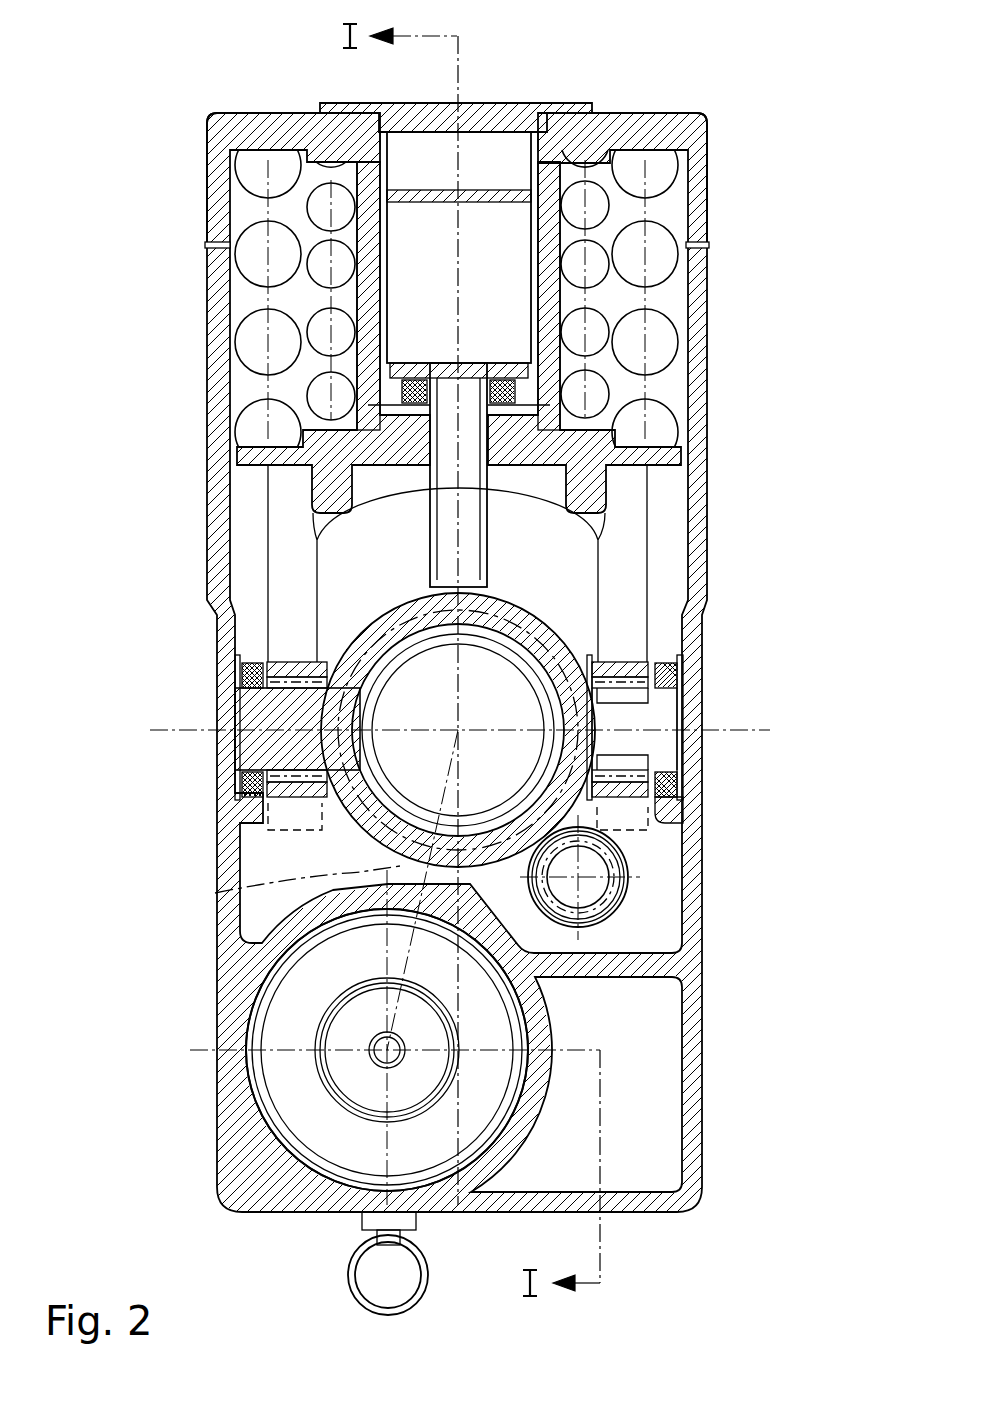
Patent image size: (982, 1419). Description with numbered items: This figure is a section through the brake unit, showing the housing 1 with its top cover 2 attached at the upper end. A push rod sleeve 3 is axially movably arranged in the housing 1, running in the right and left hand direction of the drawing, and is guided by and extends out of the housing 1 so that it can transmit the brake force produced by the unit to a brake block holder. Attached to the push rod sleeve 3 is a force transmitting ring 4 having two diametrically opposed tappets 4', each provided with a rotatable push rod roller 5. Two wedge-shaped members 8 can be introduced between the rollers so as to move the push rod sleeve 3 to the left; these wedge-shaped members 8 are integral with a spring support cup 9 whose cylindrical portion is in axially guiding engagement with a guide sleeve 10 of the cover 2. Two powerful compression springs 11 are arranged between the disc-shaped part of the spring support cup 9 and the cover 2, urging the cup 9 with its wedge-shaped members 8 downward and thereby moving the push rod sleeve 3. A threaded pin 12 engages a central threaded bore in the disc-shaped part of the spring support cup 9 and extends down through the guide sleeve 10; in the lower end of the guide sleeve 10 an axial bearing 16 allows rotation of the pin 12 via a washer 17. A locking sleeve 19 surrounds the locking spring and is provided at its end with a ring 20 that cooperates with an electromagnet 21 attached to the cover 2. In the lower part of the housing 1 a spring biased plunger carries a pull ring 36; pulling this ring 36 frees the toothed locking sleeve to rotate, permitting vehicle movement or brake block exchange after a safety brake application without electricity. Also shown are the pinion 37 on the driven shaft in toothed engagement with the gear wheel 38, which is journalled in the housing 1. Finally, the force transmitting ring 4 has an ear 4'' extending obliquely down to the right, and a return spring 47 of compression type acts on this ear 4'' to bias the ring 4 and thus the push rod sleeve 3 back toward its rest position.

The housing 1 is at (702, 523).
The top cover 2 is at (695, 150).
The push rod sleeve 3 is at (355, 714).
The force transmitting ring 4 is at (401, 720).
The tappets 4' is at (453, 730).
The ear 4'' is at (530, 760).
The push rod roller 5 is at (297, 660).
The wedge-shaped member 8 is at (283, 562).
The spring support cup 9 is at (683, 460).
The guide sleeve 10 is at (563, 208).
The compression springs 11 is at (660, 273).
The threaded pin 12 is at (452, 547).
The axial bearing 16 is at (528, 390).
The washer 17 is at (530, 410).
The locking sleeve 19 is at (505, 240).
The ring 20 is at (497, 190).
The electromagnet 21 is at (475, 155).
The pull ring 36 is at (352, 1275).
The pinion 37 is at (388, 1050).
The gear wheel 38 is at (215, 894).
The return spring 47 is at (613, 893).